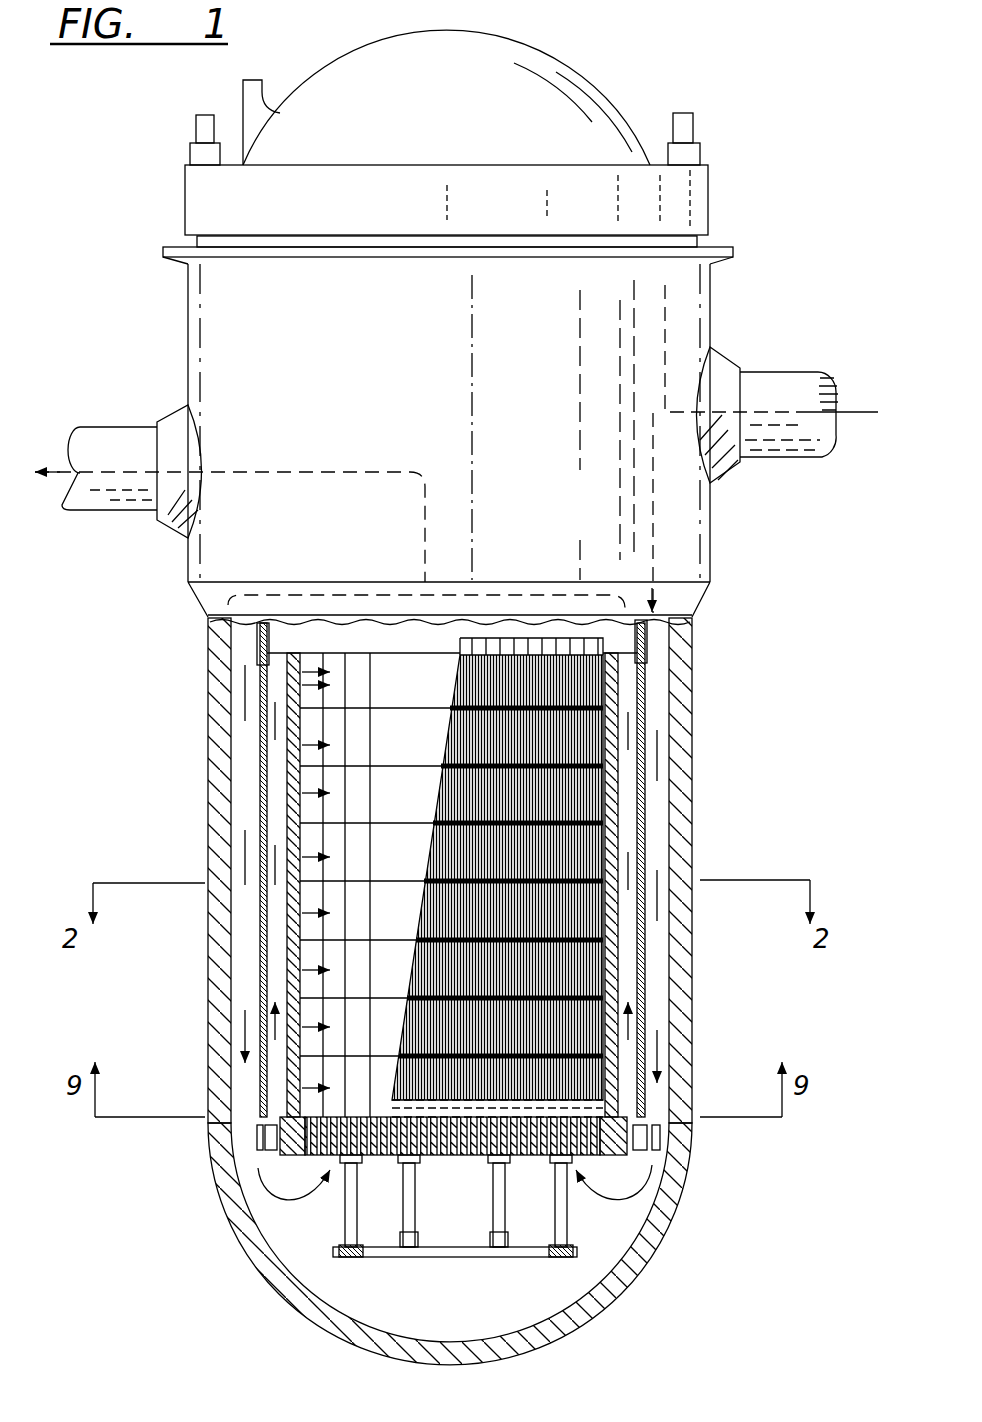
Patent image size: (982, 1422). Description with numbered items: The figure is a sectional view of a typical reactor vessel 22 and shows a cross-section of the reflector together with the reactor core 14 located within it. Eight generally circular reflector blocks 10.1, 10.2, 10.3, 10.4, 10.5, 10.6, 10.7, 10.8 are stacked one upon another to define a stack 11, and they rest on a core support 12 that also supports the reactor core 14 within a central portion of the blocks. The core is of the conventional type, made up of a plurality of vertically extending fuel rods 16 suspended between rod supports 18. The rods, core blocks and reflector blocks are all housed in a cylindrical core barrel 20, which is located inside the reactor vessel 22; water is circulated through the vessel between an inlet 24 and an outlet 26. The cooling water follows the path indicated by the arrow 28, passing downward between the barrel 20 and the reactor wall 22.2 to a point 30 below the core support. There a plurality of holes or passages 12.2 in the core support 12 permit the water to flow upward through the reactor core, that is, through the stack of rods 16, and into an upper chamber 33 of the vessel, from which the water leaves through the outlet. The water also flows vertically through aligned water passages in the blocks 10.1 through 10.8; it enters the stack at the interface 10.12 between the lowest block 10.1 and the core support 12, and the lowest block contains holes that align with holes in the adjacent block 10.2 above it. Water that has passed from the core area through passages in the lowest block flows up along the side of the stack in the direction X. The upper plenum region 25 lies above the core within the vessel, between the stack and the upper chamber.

The reflector block 10.1 is at (302, 1088).
The reflector block 10.2 is at (302, 1027).
The reflector block 10.3 is at (302, 970).
The reflector block 10.4 is at (302, 913).
The reflector block 10.5 is at (302, 857).
The reflector block 10.6 is at (302, 793).
The reflector block 10.7 is at (302, 745).
The reflector block 10.8 is at (302, 685).
The interface 10.12 is at (312, 1105).
The stack 11 is at (285, 667).
The core support 12 is at (305, 1150).
The holes or passages 12.2 is at (650, 1162).
The reactor core 14 is at (657, 1137).
The fuel rods 16 is at (595, 1035).
The rod supports 18 is at (592, 895).
The core barrel 20 is at (650, 740).
The reactor vessel 22 is at (683, 773).
The reactor wall 22.2 is at (663, 957).
The inlet 24 is at (788, 385).
The upper plenum 25 is at (295, 465).
The outlet 26 is at (135, 437).
The arrow 28 is at (658, 533).
The point below the core support 30 is at (600, 1218).
The upper chamber 33 is at (648, 380).
The direction X is at (637, 1053).